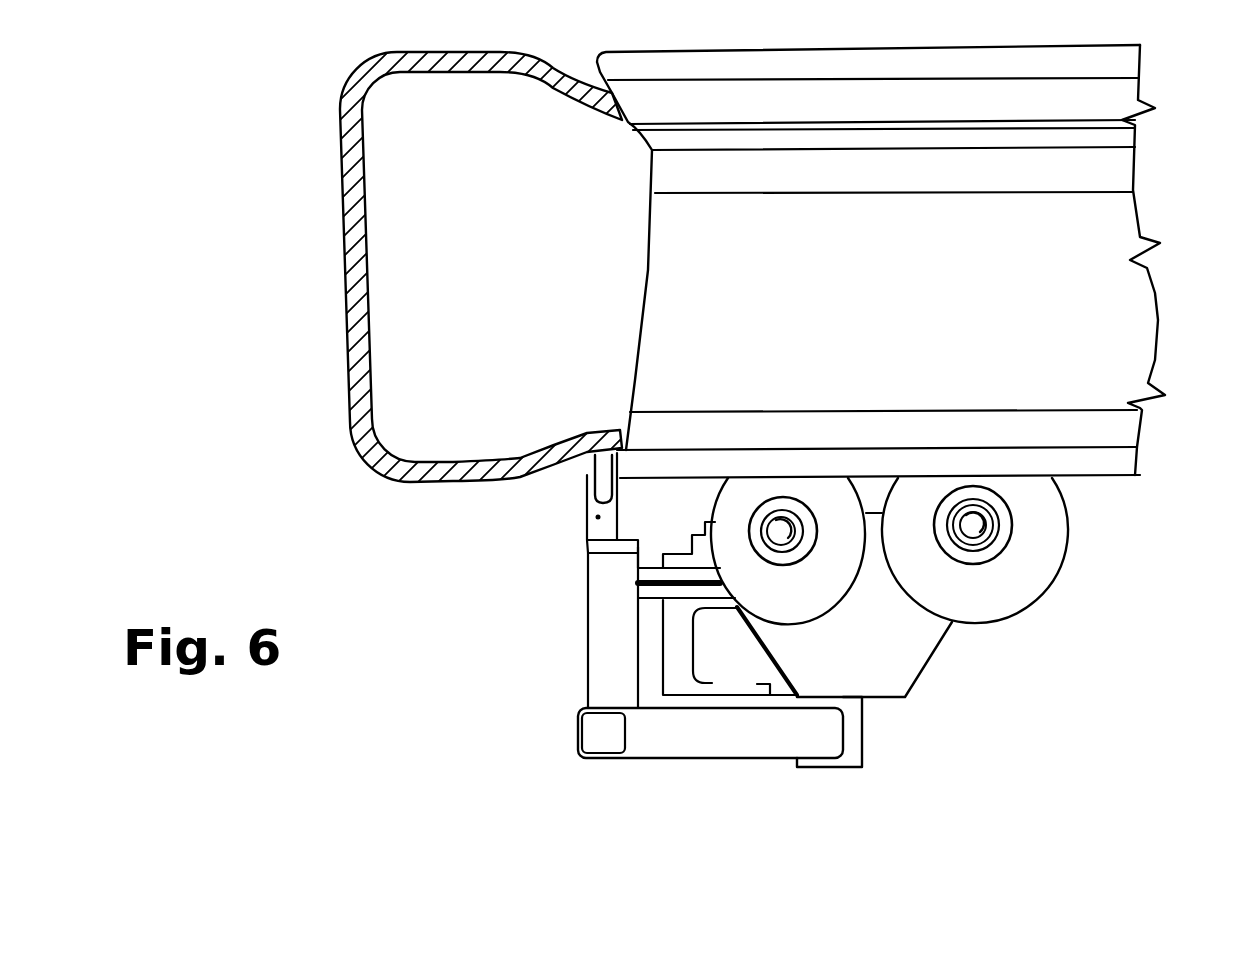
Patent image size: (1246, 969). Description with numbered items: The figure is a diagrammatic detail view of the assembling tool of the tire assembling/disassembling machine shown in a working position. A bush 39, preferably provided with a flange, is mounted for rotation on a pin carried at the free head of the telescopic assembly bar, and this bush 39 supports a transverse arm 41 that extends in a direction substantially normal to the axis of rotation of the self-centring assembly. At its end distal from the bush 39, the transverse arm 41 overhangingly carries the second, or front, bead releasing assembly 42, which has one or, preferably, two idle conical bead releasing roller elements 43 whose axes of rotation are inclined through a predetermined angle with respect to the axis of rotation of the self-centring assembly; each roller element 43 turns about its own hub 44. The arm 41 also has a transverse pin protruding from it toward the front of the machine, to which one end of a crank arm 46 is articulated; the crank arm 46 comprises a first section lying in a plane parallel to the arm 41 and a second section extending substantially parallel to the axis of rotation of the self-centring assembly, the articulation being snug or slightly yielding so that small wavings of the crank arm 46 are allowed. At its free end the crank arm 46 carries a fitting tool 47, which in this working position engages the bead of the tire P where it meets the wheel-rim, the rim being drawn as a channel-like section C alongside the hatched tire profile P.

The tire P is at (352, 112).
The C bar C is at (1135, 157).
The bush 39 is at (862, 730).
The transverse arm 41 is at (723, 742).
The second bead releasing assembly 42 is at (940, 650).
The idle conical bead releasing roller element 43 is at (1055, 567).
The roller axle / hub 44 is at (987, 532).
The crank arm 46 is at (598, 613).
The fitting tool 47 is at (583, 477).